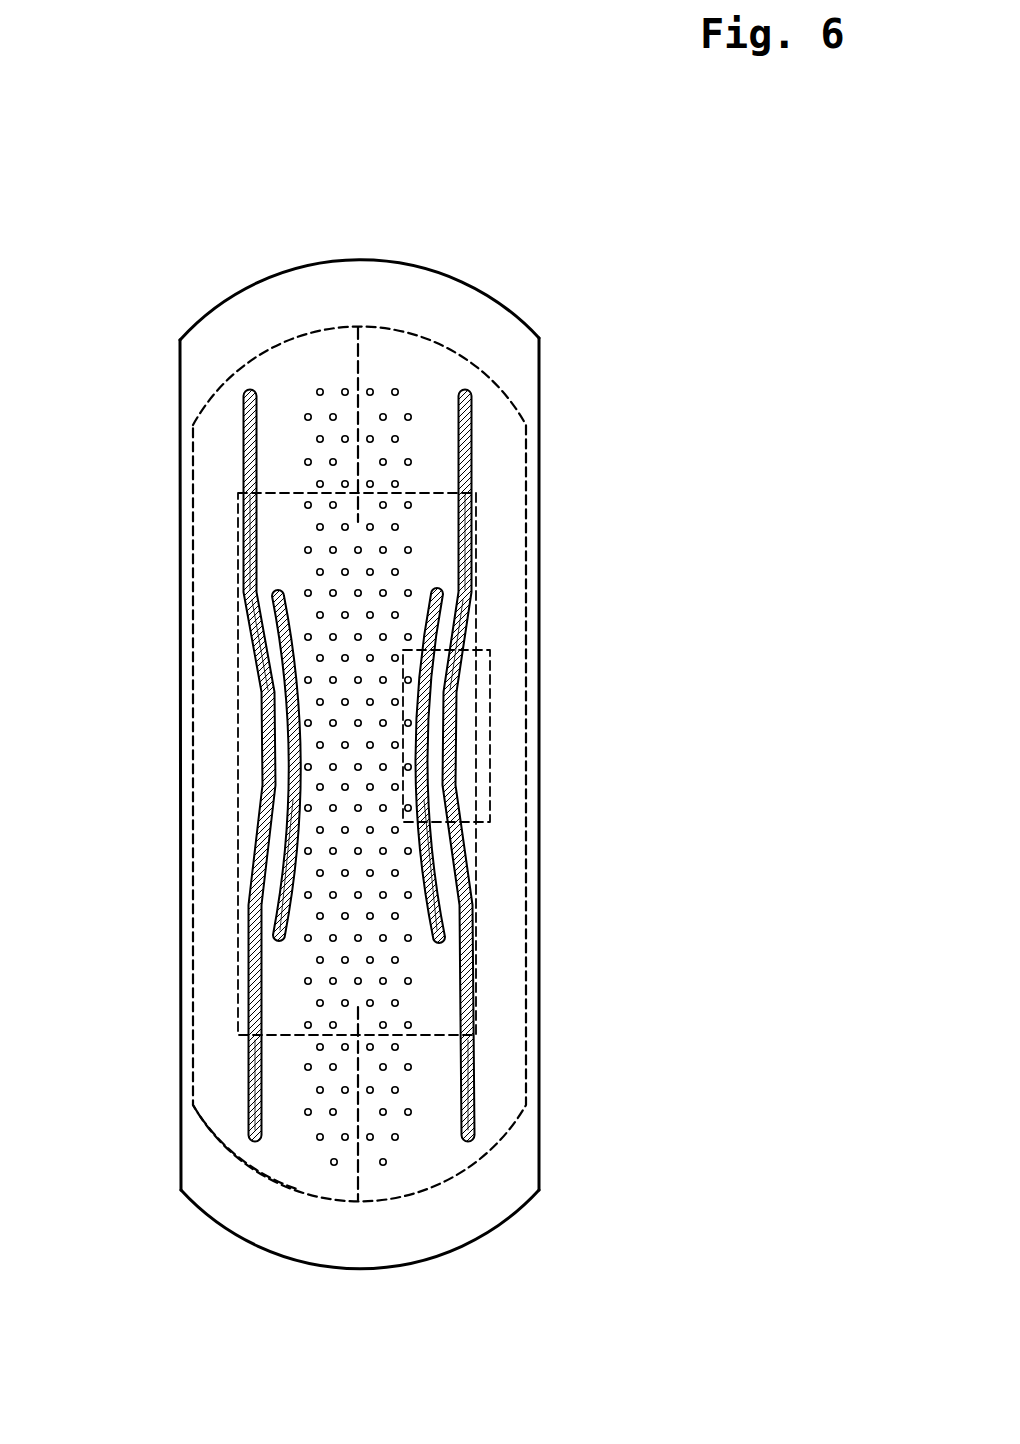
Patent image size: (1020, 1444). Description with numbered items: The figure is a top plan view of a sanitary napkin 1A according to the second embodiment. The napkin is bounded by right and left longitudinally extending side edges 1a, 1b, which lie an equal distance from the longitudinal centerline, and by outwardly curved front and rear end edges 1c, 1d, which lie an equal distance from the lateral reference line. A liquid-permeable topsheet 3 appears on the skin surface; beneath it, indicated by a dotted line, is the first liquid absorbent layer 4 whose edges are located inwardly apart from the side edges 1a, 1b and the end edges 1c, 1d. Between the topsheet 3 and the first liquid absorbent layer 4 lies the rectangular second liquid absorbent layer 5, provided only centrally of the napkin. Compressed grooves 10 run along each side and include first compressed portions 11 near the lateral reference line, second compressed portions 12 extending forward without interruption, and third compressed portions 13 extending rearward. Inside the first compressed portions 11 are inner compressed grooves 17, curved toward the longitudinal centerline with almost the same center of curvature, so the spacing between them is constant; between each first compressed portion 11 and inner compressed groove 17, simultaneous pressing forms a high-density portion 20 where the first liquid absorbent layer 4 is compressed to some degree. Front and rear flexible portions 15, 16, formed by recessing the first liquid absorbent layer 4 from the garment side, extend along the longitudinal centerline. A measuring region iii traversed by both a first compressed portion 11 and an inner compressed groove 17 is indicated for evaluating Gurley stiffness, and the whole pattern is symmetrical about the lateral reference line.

The sanitary napkin 1A is at (357, 774).
The right side edge 1a is at (540, 780).
The left side edge 1b is at (178, 773).
The front end edge 1c is at (328, 262).
The rear end edge 1d is at (372, 1270).
The liquid-permeable topsheet 3 is at (453, 1163).
The first liquid absorbent layer 4 is at (245, 1175).
The second liquid absorbent layer 5 is at (432, 1036).
The compressed grooves 10 is at (230, 537).
The first compressed portions 11 is at (257, 677).
The second compressed portions 12 is at (240, 437).
The third compressed portions 13 is at (247, 1062).
The front flexible portion 15 is at (357, 378).
The rear flexible portion 16 is at (357, 1167).
The inner compressed grooves 17 is at (290, 852).
The high-density portions 20 is at (270, 643).
The measuring region iii is at (497, 810).